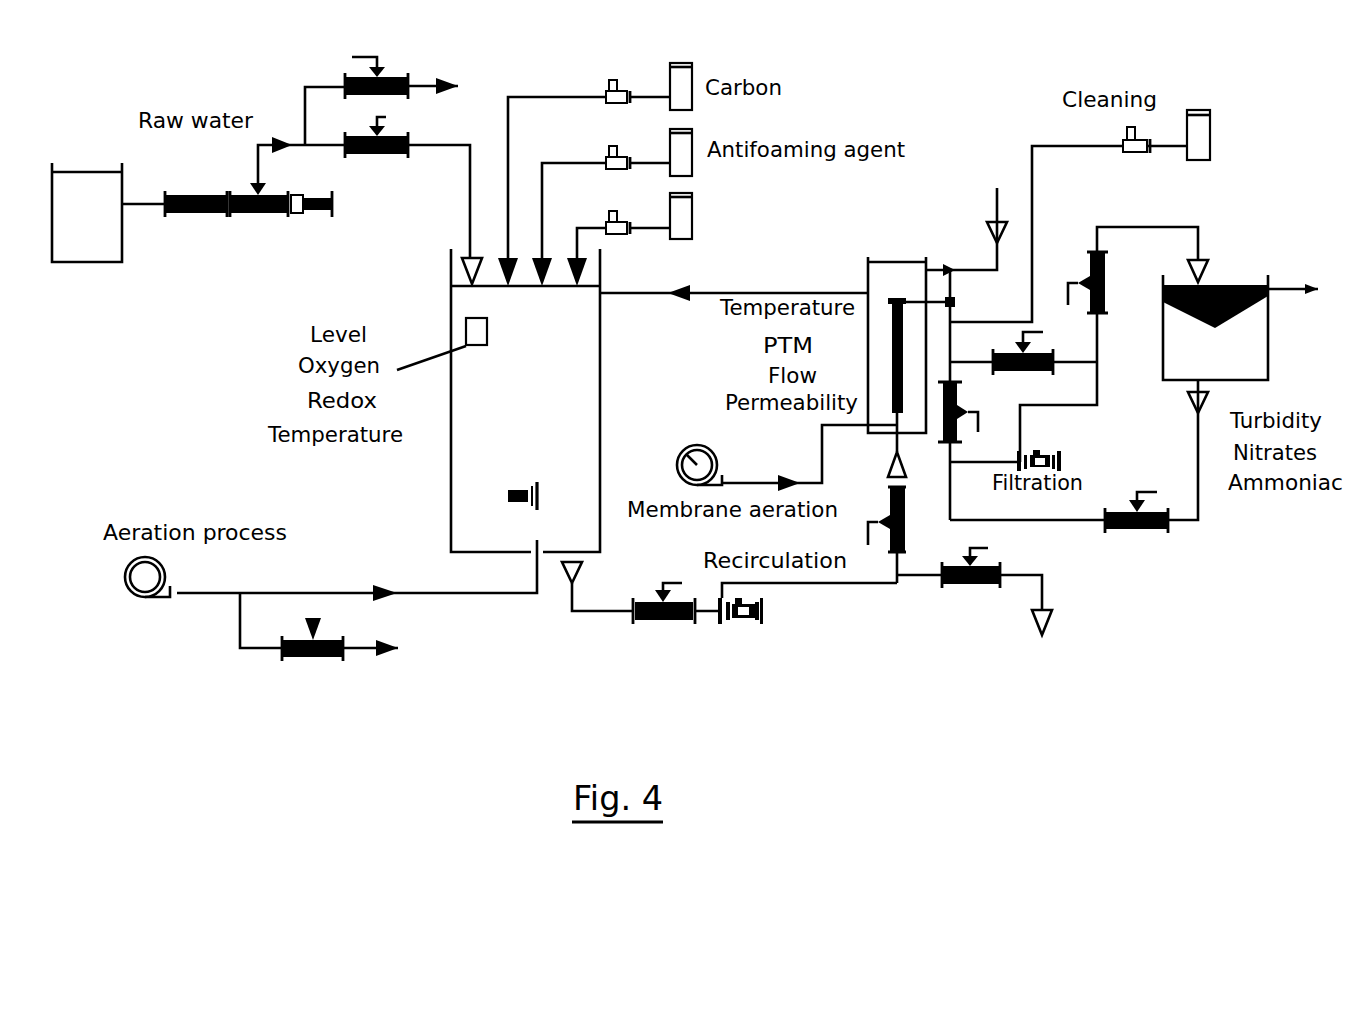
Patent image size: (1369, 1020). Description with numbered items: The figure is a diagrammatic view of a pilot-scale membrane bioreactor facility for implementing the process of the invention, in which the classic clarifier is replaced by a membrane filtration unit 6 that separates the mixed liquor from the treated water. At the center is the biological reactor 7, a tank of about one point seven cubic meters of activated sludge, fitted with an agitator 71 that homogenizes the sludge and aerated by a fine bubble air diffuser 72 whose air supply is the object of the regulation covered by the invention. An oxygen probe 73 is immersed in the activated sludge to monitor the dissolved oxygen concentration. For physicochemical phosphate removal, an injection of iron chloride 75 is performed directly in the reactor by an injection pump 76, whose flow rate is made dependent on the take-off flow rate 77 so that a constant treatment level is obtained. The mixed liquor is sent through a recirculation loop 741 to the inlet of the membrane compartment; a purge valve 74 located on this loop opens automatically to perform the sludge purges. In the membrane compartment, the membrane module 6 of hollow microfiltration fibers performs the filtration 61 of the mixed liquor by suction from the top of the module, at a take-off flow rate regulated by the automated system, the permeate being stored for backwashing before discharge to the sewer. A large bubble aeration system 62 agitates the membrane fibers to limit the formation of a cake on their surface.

The biological reactor 7 is at (483, 520).
The membrane filtration unit 6 is at (912, 435).
The filtration 61 is at (1065, 462).
The large bubble aeration system 62 is at (678, 457).
The agitator 71 is at (518, 500).
The fine bubble air diffuser 72 is at (142, 603).
The oxygen probe 73 is at (452, 328).
The purge valve 74 is at (992, 562).
The recirculation loop 741 is at (883, 585).
The iron chloride injection 75 is at (693, 227).
The injection pump 76 is at (228, 217).
The take-off flow rate 77 is at (735, 623).